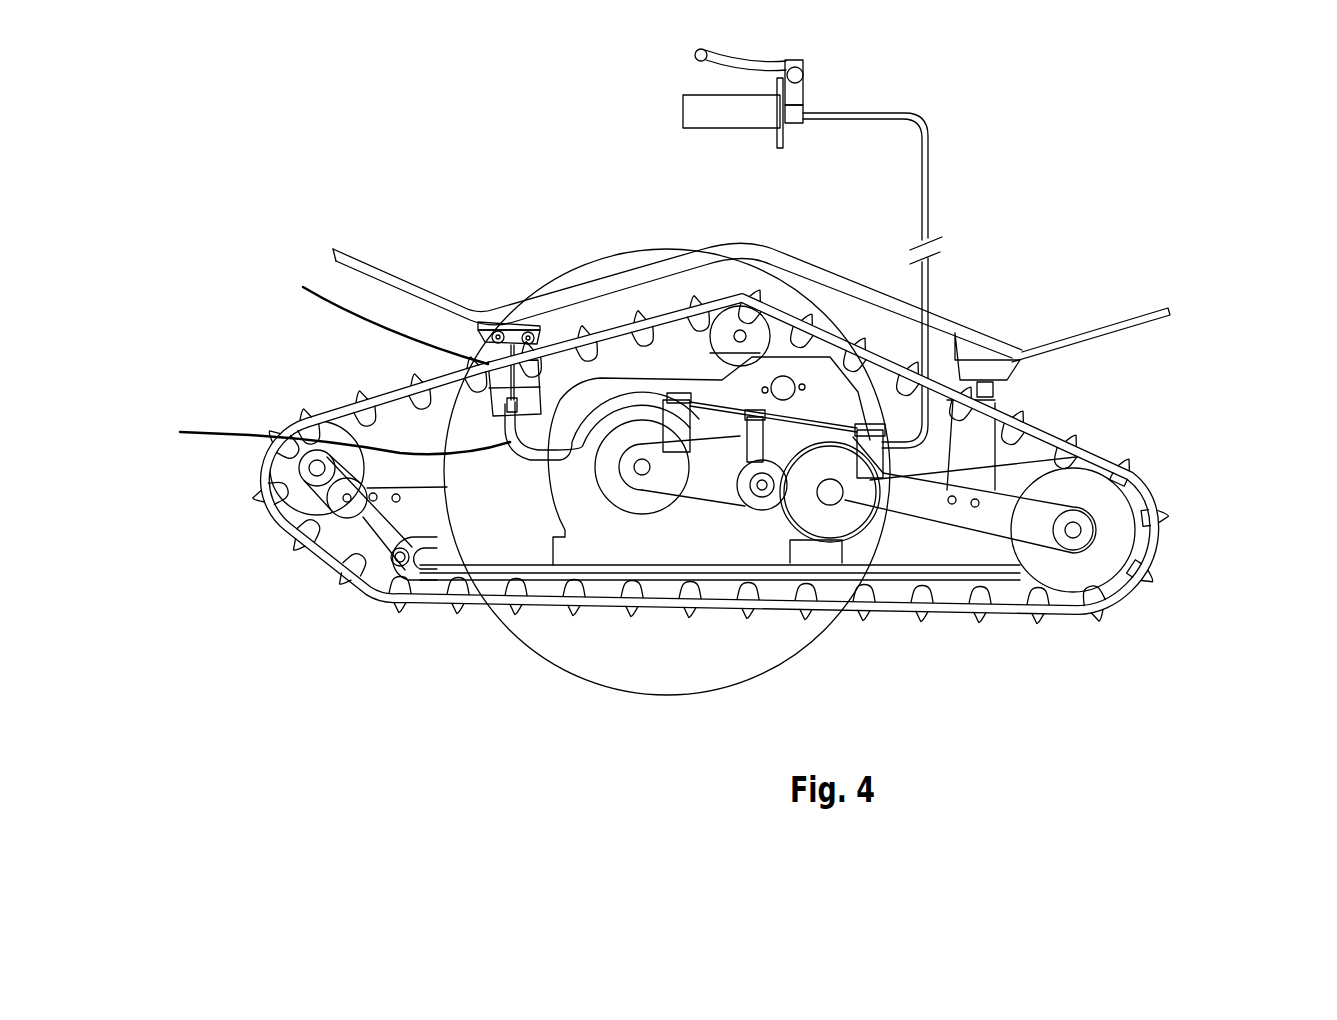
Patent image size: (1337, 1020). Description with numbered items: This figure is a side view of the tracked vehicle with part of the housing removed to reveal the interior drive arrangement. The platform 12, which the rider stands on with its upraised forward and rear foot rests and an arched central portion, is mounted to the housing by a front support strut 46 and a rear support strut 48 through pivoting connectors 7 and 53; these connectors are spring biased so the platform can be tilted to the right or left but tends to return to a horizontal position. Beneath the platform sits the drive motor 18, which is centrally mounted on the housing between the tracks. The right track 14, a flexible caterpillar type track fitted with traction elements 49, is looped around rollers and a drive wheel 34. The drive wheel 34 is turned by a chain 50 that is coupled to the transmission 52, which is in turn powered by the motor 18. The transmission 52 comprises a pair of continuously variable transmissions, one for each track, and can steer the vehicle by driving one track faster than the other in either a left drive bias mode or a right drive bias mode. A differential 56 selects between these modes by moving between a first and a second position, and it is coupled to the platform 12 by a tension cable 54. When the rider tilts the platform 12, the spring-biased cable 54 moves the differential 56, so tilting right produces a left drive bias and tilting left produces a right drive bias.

The pivoting connector 7 is at (497, 330).
The platform 12 is at (398, 278).
The right track 14 is at (322, 547).
The drive motor 18 is at (818, 395).
The drive wheel 34 is at (1121, 560).
The front support strut 46 is at (366, 314).
The rear support strut 48 is at (987, 450).
The traction elements 49 is at (462, 612).
The chain 50 is at (978, 573).
The transmission 52 is at (720, 478).
The pivoting connector 53 is at (990, 370).
The tension cable 54 is at (319, 434).
The differential 56 is at (750, 513).